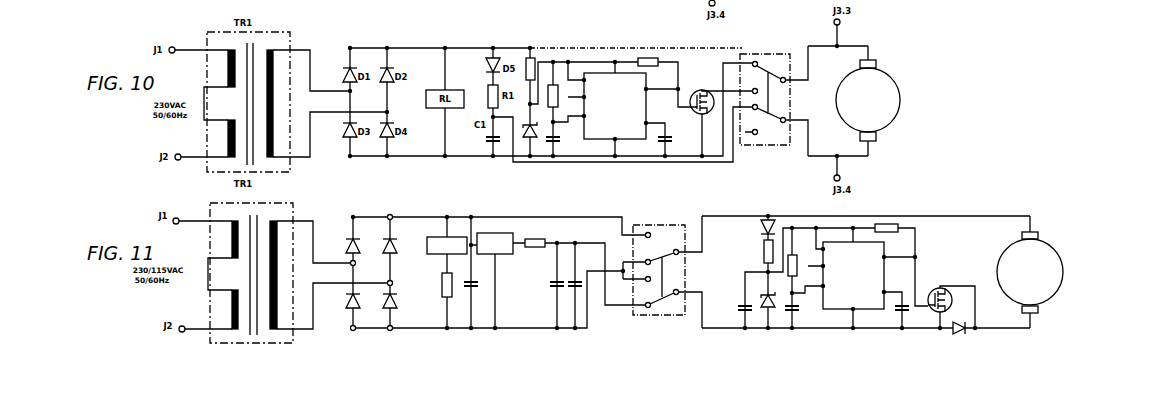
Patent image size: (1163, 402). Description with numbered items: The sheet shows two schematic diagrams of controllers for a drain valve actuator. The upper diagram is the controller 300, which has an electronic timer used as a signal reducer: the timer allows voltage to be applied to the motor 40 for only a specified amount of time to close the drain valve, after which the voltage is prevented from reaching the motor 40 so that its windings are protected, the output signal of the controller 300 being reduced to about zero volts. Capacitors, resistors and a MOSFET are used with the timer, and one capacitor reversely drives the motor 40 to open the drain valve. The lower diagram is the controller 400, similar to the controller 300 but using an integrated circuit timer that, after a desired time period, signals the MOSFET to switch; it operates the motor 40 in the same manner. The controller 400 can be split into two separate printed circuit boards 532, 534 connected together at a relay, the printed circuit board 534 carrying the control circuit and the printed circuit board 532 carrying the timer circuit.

In FIG. 10, the controller 300 is at (516, 24).
In FIG. 11, the controller 400 is at (688, 282).
In FIG. 10, the motor 40 is at (897, 90).
In FIG. 11, the motor 40 is at (1060, 258).
In FIG. 11, the printed circuit board 534 is at (430, 361).
In FIG. 11, the printed circuit board 532 is at (805, 364).